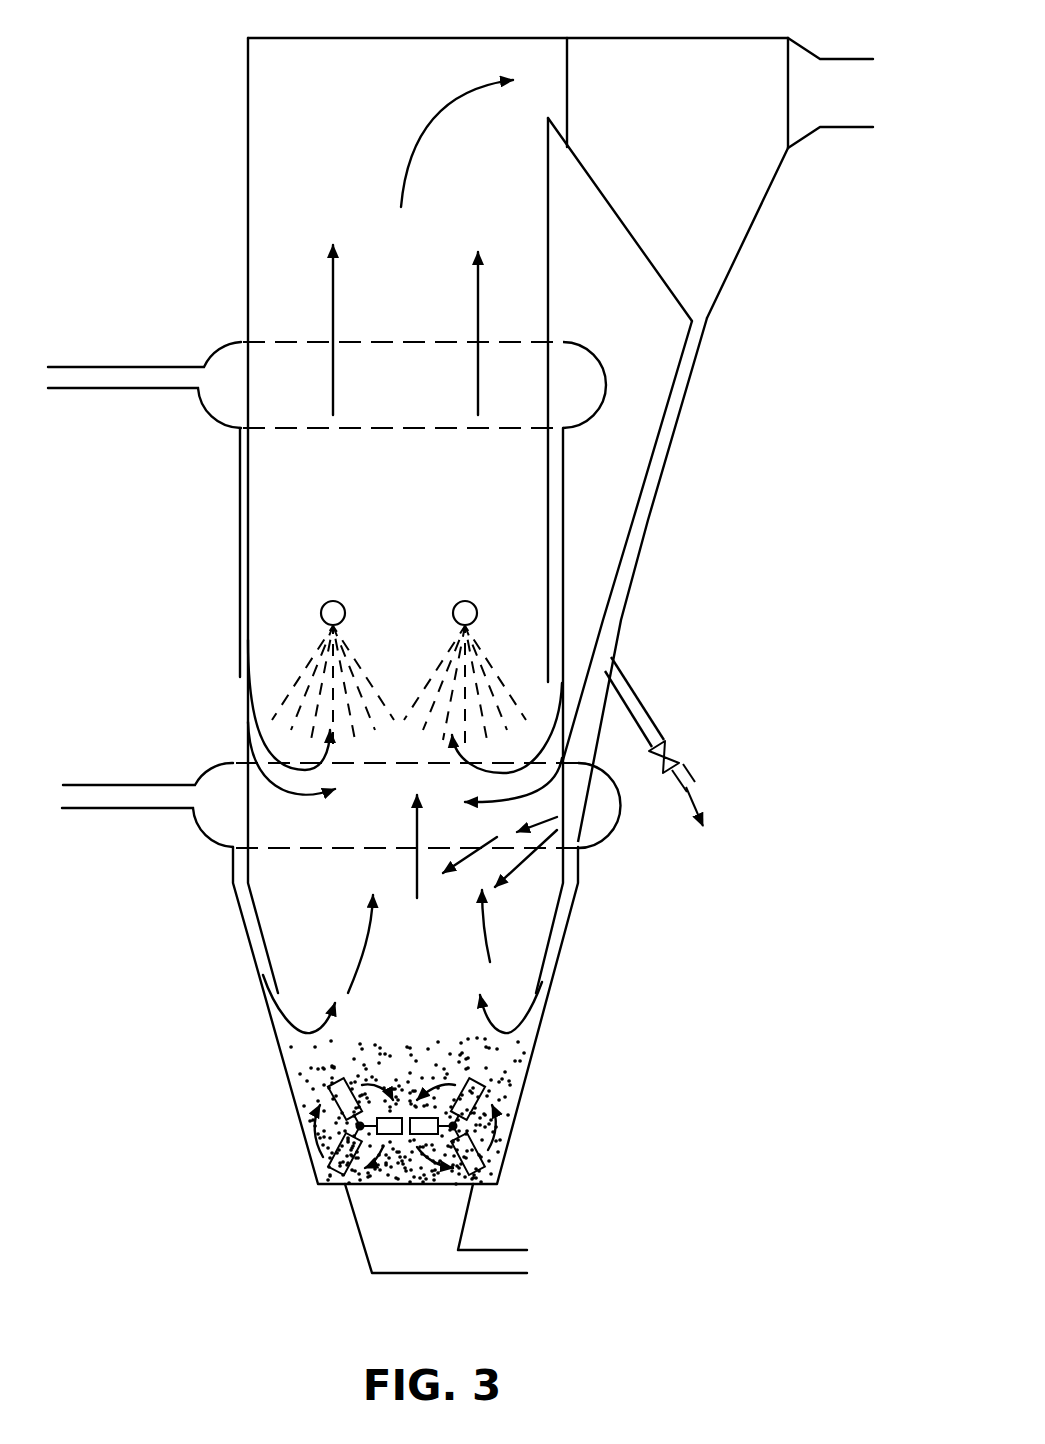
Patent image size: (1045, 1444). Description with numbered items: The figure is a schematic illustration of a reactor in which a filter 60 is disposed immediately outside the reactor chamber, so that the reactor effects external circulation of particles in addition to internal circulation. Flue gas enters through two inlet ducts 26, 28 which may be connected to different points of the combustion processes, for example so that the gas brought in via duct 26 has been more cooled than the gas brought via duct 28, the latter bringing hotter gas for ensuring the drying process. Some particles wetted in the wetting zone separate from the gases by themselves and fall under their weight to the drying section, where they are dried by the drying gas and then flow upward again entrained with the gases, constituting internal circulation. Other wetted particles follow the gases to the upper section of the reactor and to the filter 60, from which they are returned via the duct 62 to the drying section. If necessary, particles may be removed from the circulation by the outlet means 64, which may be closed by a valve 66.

The flue gas inlet duct 26 is at (128, 375).
The flue gas inlet duct 28 is at (153, 797).
The filter 60 is at (691, 173).
The duct 62 is at (668, 430).
The outlet means 64 is at (630, 698).
The valve 66 is at (670, 760).